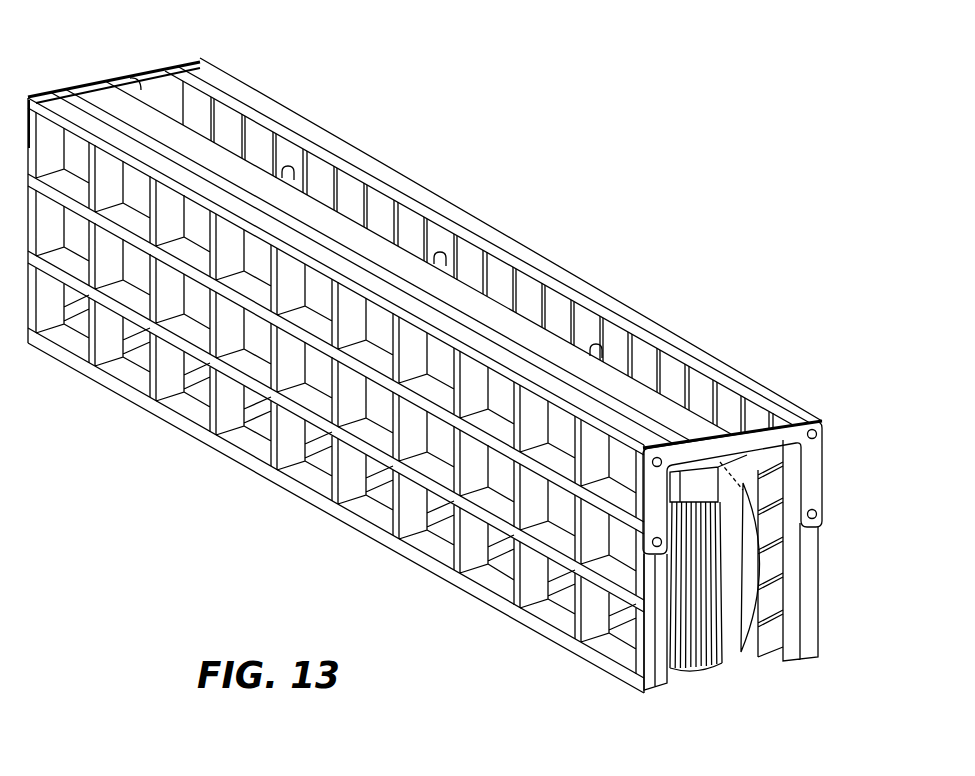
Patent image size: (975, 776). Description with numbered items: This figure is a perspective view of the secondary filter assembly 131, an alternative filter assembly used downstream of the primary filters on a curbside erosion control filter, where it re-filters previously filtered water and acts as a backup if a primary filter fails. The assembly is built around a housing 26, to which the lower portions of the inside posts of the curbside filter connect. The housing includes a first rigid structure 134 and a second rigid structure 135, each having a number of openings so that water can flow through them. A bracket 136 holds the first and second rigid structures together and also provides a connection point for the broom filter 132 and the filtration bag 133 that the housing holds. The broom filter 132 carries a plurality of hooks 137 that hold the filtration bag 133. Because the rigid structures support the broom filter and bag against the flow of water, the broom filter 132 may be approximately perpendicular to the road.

The housing 26 is at (655, 692).
The secondary filter assembly 131 is at (529, 192).
The broom filter 132 is at (706, 668).
The filtration bag 133 is at (758, 604).
The first rigid structure 134 is at (375, 526).
The end frame member 135 is at (808, 559).
The bracket 136 is at (160, 70).
The hooks 137 is at (153, 62).